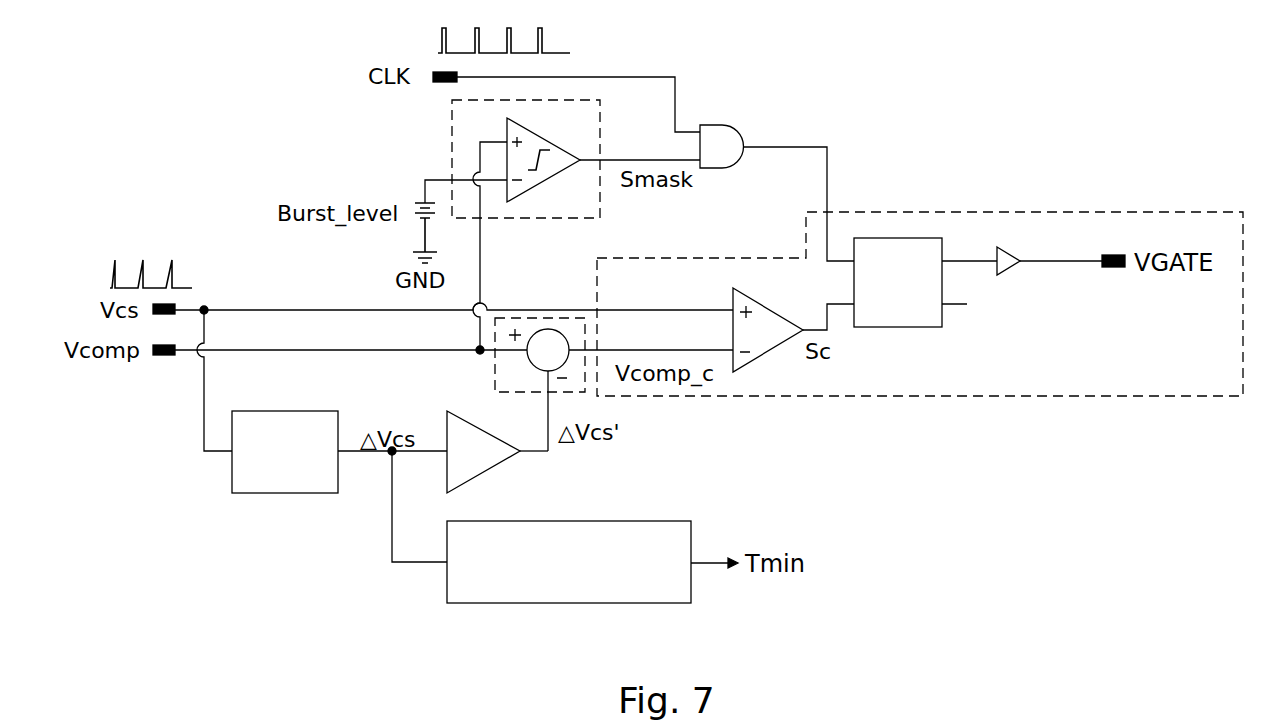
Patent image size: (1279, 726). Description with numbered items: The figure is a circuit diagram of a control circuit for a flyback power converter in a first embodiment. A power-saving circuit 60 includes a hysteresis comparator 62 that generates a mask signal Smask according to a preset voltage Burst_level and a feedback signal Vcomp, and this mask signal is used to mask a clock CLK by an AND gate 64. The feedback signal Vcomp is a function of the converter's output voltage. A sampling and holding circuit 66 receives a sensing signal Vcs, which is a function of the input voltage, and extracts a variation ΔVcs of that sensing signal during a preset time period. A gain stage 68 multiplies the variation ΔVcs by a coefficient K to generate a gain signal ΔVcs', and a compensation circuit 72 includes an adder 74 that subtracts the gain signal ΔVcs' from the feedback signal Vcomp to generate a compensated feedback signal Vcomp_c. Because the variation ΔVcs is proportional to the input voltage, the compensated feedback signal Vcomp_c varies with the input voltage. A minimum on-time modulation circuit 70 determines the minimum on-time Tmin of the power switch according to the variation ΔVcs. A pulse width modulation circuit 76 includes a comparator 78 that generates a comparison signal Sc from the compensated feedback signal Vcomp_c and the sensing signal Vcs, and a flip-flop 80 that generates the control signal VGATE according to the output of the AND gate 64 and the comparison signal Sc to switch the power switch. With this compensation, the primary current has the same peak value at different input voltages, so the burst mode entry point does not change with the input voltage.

The power-saving circuit 60 is at (452, 128).
The hysteresis comparator 62 is at (547, 141).
The AND gate 64 is at (720, 125).
The sampling and holding circuit 66 is at (282, 493).
The gain stage 68 is at (490, 472).
The minimum on-time modulation circuit 70 is at (636, 521).
The compensation circuit 72 is at (495, 365).
The adder 74 is at (545, 329).
The pulse width modulation circuit 76 is at (993, 212).
The comparator 78 is at (770, 310).
The flip-flop 80 is at (895, 327).